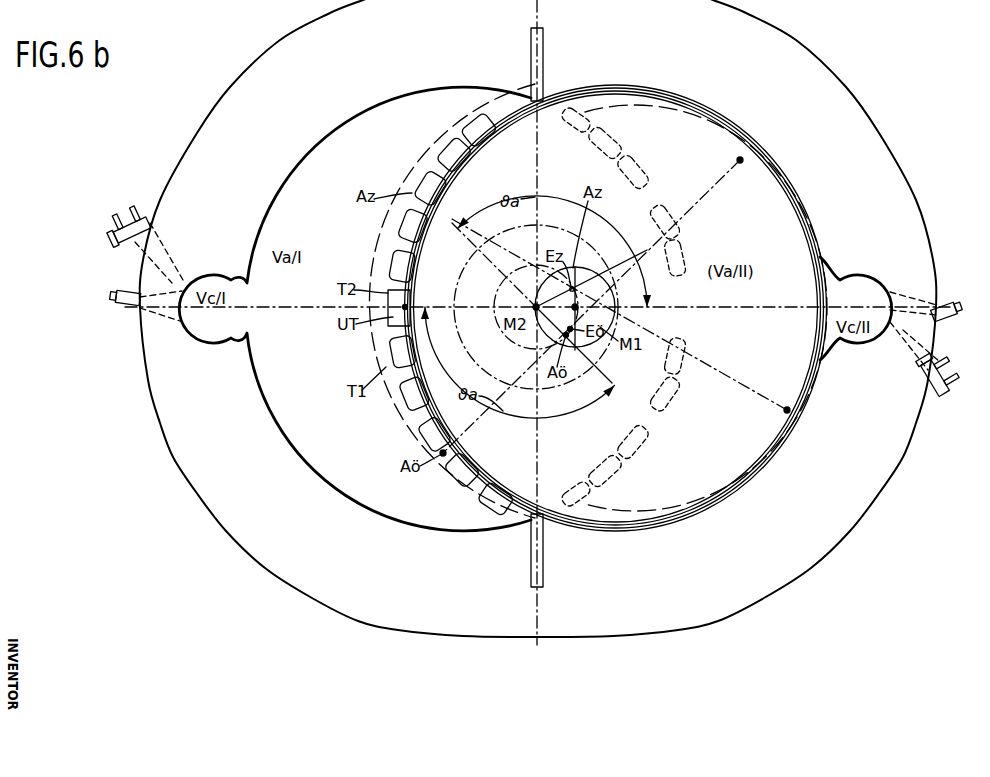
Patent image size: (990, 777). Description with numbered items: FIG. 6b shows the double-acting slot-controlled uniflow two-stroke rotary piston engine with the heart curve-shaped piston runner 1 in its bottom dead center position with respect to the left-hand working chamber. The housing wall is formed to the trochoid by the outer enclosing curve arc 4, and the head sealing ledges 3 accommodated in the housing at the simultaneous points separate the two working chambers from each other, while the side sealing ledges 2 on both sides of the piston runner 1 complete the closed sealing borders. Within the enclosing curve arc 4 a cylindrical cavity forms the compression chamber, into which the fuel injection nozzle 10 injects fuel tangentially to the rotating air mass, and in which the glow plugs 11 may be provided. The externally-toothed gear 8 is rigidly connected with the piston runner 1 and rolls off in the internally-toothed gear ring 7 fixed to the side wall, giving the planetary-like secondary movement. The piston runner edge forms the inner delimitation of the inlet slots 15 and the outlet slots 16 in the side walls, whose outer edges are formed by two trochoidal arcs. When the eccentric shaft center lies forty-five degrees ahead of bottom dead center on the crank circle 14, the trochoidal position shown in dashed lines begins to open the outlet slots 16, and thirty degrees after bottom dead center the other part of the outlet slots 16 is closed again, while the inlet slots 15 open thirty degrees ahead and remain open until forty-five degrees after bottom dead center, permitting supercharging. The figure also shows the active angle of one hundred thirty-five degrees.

The piston runner 1 is at (452, 163).
The side sealing ledges 2 is at (400, 325).
The head sealing ledges 3 is at (531, 99).
The enclosing curve arc 4 is at (306, 150).
The internally-toothed gear ring 7 is at (548, 229).
The externally-toothed gear 8 is at (593, 270).
The fuel injection nozzle 10 is at (130, 225).
The glow plugs 11 is at (124, 293).
The crank circle 14 is at (497, 297).
The inlet slots 15 is at (395, 228).
The outlet slots 16 is at (403, 404).